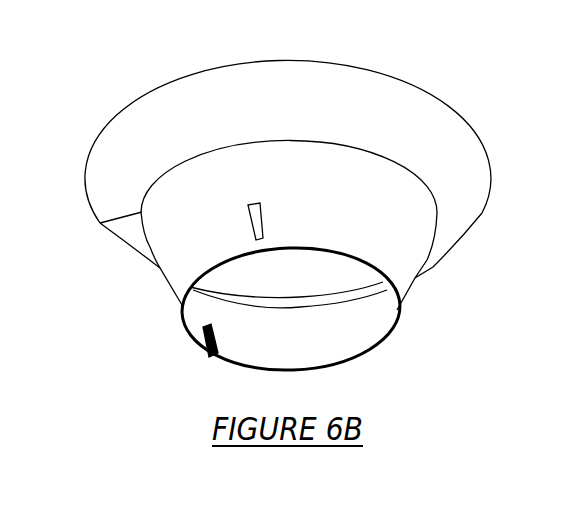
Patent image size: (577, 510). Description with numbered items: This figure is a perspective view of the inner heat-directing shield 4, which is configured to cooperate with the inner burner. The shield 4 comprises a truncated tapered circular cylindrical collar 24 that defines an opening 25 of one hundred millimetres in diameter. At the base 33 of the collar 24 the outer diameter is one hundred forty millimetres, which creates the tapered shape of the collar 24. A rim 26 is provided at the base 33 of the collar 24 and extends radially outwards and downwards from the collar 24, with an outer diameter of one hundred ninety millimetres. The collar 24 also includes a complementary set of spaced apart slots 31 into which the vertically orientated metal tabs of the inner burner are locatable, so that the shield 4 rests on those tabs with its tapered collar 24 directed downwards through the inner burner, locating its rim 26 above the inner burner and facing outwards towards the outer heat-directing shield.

The inner heat-directing shield 4 is at (438, 86).
The collar 24 is at (400, 270).
The opening 25 is at (363, 321).
The rim 26 is at (465, 203).
The slots 31 is at (263, 220).
The base 33 is at (103, 222).